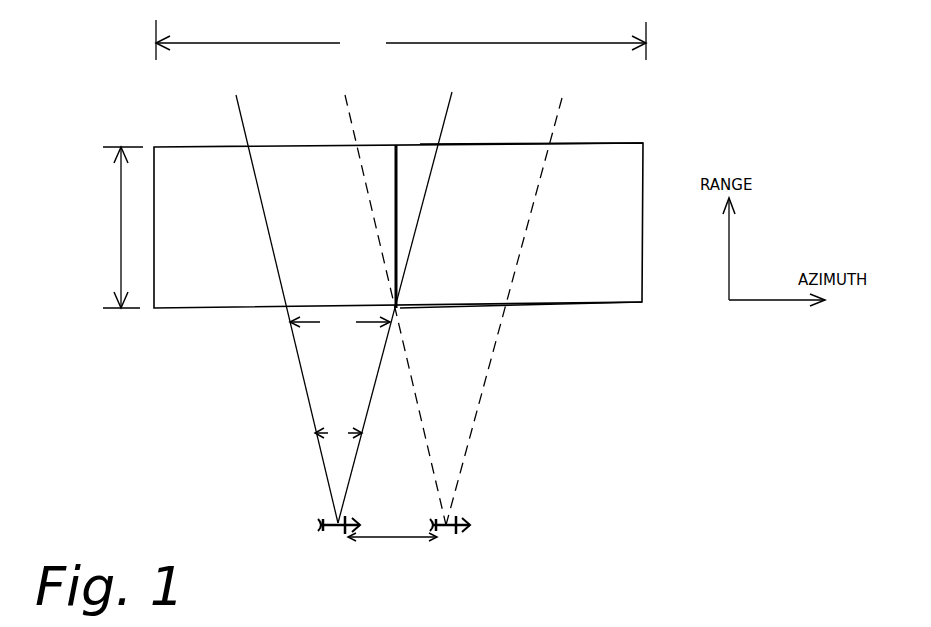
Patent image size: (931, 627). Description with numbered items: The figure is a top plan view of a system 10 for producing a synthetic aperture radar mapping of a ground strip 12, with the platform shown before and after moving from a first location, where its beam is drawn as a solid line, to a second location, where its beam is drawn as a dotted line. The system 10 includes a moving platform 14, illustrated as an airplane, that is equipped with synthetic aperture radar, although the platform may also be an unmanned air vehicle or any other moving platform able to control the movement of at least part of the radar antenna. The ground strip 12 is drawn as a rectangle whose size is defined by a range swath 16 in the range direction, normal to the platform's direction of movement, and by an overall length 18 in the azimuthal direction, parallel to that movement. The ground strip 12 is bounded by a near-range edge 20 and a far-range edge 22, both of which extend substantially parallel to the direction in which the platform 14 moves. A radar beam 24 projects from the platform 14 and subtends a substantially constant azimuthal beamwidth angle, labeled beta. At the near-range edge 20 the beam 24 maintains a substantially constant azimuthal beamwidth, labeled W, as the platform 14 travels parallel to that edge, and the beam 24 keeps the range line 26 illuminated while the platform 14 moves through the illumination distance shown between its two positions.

The system 10 is at (150, 415).
The ground strip 12 is at (198, 163).
The moving platform 14 is at (330, 534).
The range swath 16 is at (120, 212).
The overall length 18 is at (401, 40).
The near-range edge 20 is at (576, 304).
The far-range edge 22 is at (616, 143).
The radar beam 24 is at (290, 345).
The range line 26 is at (393, 165).